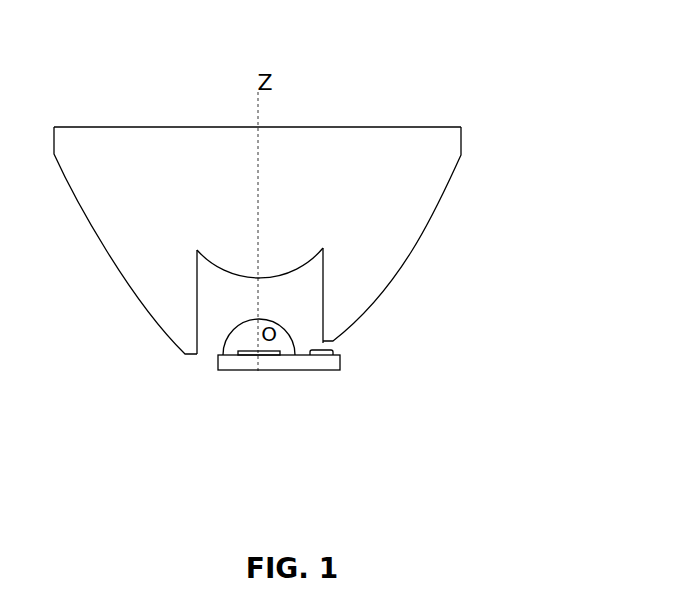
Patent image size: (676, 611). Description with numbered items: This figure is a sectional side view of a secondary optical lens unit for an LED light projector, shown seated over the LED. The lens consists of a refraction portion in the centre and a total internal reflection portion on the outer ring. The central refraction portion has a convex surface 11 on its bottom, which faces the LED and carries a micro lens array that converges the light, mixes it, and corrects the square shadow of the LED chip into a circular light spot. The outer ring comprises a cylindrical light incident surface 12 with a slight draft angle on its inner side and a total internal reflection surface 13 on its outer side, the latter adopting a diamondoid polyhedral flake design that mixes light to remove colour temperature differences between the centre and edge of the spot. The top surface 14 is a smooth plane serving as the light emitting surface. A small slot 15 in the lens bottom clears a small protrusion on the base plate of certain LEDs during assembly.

The convex surface 11 is at (225, 268).
The cylindrical light incident surface 12 is at (323, 277).
The total internal reflection surface 13 is at (422, 232).
The top surface 14 is at (205, 127).
The slot 15 is at (333, 343).
The element LED is at (247, 360).